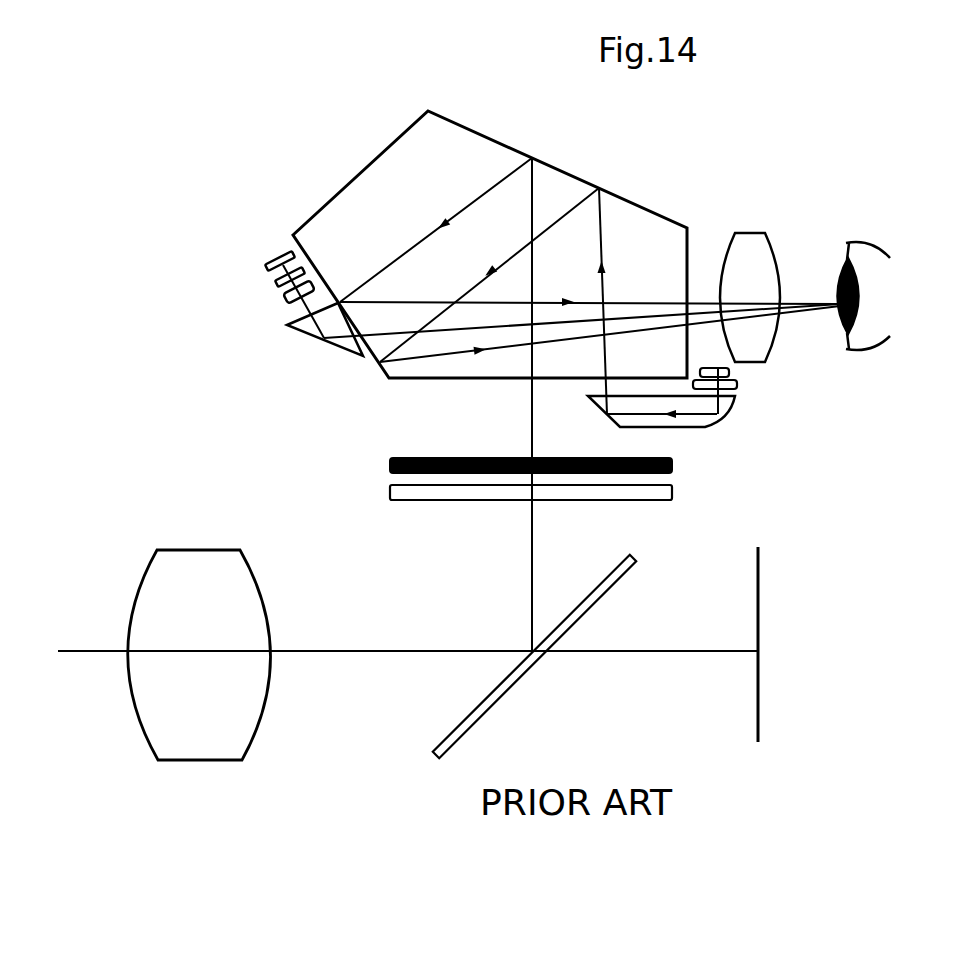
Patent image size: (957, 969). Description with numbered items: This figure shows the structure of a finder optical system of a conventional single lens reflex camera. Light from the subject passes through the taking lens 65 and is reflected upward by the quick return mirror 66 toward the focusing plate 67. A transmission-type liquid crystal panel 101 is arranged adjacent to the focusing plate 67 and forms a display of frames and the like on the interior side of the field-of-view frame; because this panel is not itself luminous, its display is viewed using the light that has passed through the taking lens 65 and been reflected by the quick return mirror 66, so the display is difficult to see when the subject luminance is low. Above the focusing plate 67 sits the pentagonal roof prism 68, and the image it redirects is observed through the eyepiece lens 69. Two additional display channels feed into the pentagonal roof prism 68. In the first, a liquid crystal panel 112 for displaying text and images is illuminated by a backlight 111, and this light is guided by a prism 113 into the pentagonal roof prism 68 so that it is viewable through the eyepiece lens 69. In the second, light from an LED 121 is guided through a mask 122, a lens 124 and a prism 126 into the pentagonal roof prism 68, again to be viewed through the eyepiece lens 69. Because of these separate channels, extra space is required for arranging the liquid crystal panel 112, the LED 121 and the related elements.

The pentagonal roof prism 68 is at (378, 157).
The eyepiece lens 69 is at (755, 233).
The LED 121 is at (272, 262).
The mask 122 is at (272, 286).
The lens 124 is at (285, 302).
The prism 126 is at (303, 333).
The backlight 111 is at (730, 372).
The liquid crystal panel 112 is at (737, 384).
The prism 113 is at (717, 414).
The transmission-type liquid crystal panel 101 is at (672, 465).
The focusing plate 67 is at (672, 492).
The quick return mirror 66 is at (480, 720).
The taking lens 65 is at (203, 760).